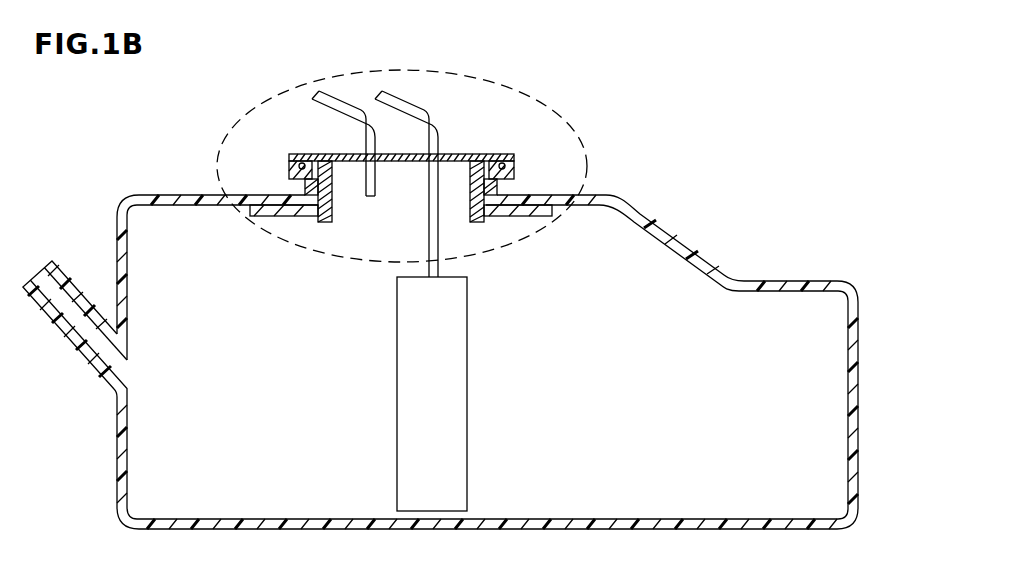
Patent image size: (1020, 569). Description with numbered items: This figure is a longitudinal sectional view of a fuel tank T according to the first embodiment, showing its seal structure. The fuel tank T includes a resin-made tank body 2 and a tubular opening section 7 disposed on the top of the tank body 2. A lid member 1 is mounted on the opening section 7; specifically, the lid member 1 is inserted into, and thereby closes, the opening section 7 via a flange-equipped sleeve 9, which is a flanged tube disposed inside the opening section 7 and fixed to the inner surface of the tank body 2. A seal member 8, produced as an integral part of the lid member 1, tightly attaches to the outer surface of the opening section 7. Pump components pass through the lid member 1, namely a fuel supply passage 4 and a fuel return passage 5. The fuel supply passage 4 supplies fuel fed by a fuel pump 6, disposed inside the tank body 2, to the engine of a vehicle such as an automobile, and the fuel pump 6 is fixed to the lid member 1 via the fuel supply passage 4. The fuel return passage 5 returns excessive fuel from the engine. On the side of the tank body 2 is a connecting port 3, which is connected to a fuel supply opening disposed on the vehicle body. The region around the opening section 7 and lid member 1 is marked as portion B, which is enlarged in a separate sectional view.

The fuel tank T is at (703, 153).
The portion B is at (243, 94).
The lid member 1 is at (449, 141).
The tank body 2 is at (851, 351).
The connecting port 3 is at (51, 361).
The fuel supply passage 4 is at (401, 86).
The fuel return passage 5 is at (336, 86).
The fuel pump 6 is at (429, 383).
The opening section 7 is at (508, 178).
The seal member 8 is at (296, 153).
The flange-equipped sleeve 9 is at (293, 215).